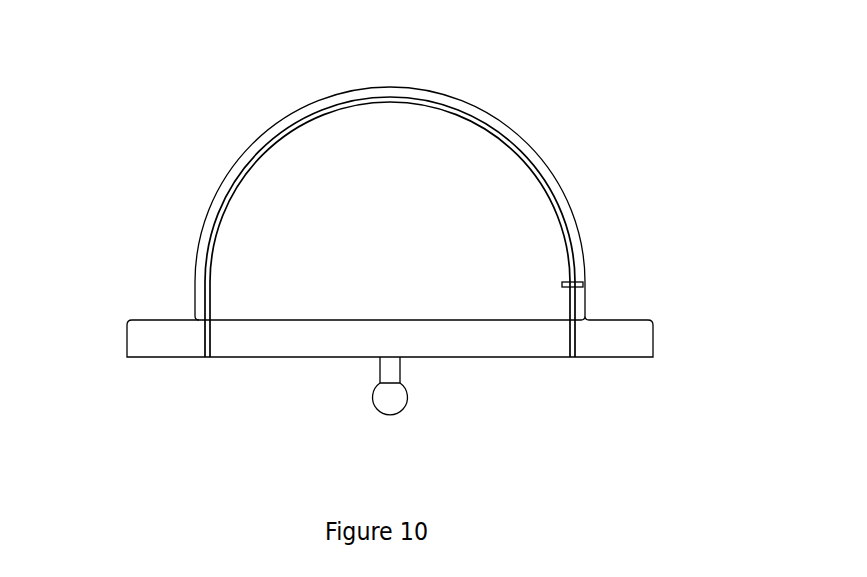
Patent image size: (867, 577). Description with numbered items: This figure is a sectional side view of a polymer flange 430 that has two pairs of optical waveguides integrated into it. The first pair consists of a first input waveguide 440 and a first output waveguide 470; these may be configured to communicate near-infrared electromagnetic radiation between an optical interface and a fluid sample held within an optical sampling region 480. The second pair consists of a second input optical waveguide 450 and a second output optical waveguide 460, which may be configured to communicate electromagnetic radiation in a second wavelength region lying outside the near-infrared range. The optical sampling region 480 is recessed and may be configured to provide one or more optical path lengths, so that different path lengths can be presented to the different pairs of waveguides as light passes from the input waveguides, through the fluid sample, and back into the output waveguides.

The polymer flange 430 is at (146, 78).
The first input waveguide 440 is at (207, 298).
The second input optical waveguide 450 is at (210, 340).
The second output optical waveguide 460 is at (565, 346).
The first output waveguide 470 is at (577, 337).
The optical sampling region 480 is at (583, 284).